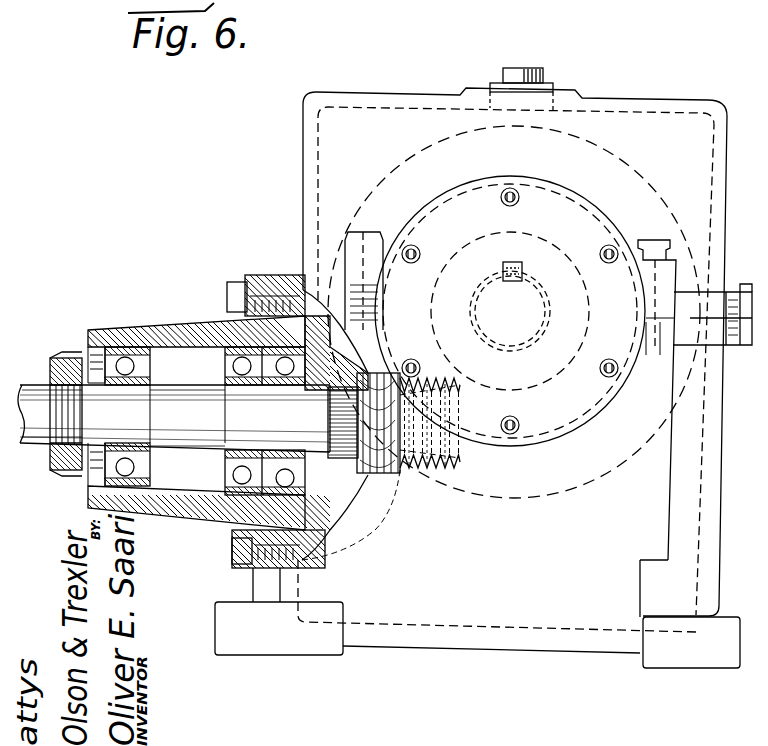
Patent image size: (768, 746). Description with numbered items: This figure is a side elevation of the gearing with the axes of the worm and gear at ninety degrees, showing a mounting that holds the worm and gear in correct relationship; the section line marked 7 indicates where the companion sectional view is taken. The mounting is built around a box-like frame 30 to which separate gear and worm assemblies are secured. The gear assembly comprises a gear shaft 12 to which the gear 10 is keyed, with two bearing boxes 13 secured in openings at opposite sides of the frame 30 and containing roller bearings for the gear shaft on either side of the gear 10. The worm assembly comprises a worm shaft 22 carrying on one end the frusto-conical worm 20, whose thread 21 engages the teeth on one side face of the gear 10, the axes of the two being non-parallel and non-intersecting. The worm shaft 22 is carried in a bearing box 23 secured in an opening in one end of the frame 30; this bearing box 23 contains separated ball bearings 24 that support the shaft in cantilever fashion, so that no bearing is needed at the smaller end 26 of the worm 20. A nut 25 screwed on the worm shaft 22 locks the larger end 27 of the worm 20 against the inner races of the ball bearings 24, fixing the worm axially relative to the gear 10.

The section line 7- 7 is at (520, 110).
The gear 10 is at (386, 172).
The gear shaft 12 is at (531, 283).
The bearing boxes 13 is at (703, 390).
The frusto-conical worm 20 is at (394, 462).
The thread 21 is at (446, 388).
The worm shaft 22 is at (190, 432).
The bearing box 23 is at (167, 326).
The ball bearings 24 is at (125, 357).
The nut 25 is at (68, 358).
The smaller end 26 is at (462, 404).
The larger end 27 is at (340, 430).
The box-like frame 30 is at (640, 97).